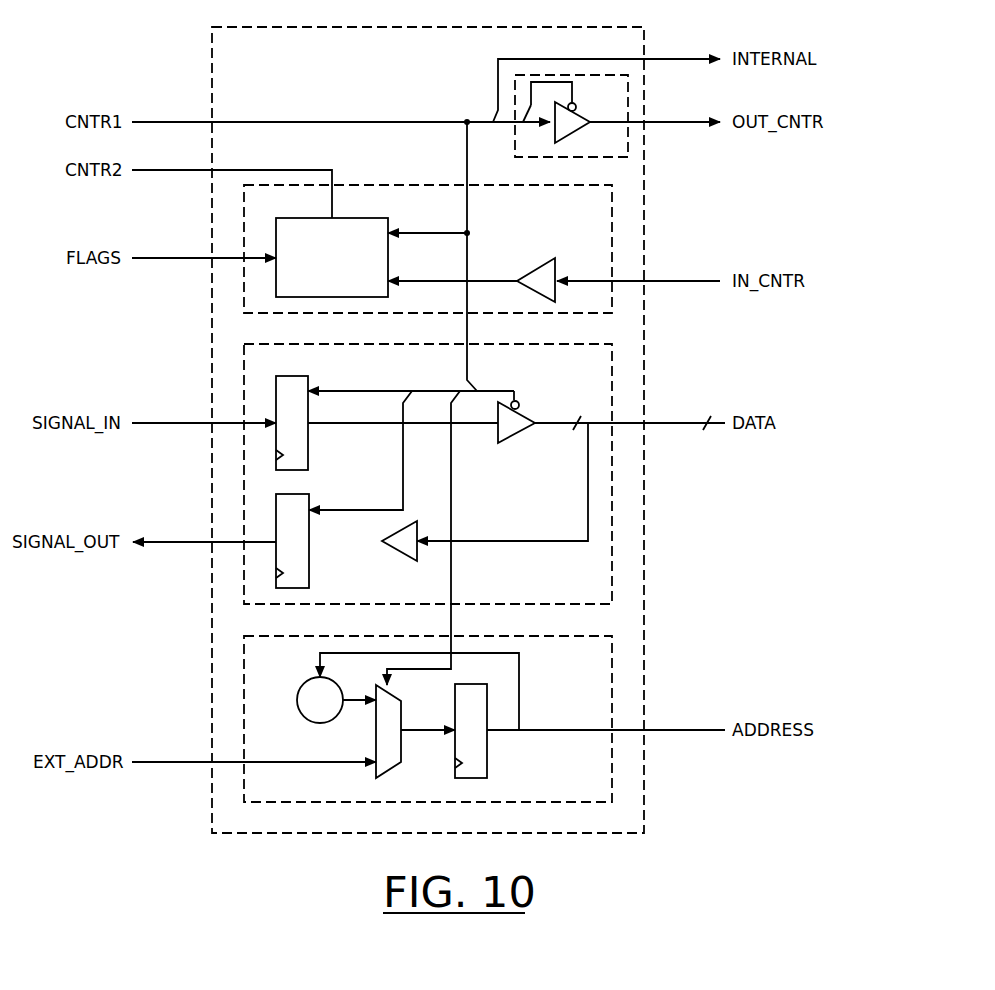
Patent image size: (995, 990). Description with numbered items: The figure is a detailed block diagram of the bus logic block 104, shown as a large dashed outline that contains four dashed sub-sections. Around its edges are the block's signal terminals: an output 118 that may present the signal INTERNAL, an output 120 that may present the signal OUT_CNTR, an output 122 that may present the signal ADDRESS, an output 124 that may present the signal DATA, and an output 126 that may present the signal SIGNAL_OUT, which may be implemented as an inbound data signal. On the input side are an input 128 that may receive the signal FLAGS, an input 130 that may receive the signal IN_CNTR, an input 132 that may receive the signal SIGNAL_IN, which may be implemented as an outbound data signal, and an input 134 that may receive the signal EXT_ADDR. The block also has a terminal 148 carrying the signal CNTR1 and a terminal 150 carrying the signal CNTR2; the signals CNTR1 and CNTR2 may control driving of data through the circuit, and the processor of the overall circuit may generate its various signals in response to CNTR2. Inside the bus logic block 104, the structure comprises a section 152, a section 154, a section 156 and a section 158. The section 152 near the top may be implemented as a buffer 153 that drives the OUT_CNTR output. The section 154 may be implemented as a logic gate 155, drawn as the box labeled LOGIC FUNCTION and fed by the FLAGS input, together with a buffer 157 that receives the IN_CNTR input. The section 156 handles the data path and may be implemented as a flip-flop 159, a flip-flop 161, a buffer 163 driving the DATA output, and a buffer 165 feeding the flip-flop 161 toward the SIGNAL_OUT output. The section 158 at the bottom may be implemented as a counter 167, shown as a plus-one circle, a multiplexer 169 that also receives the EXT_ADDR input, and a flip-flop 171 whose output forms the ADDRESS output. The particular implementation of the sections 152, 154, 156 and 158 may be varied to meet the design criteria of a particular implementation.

The bus logic block 104 is at (604, 24).
The output 118 is at (646, 62).
The output 120 is at (646, 125).
The output 122 is at (646, 733).
The output 124 is at (646, 426).
The output 126 is at (210, 544).
The input 128 is at (210, 260).
The input 130 is at (646, 284).
The input 132 is at (210, 425).
The input 134 is at (210, 764).
The CNTR1 signal line 148 is at (210, 124).
The CNTR2 signal line 150 is at (210, 172).
The section 152 is at (586, 160).
The buffer 153 is at (568, 133).
The section 154 is at (524, 185).
The logic gate 155 is at (362, 216).
The section 156 is at (548, 344).
The buffer 157 is at (542, 265).
The section 158 is at (512, 636).
The flip-flop 159 is at (300, 376).
The flip-flop 161 is at (300, 494).
The buffer 163 is at (520, 434).
The buffer 165 is at (402, 553).
The counter 167 is at (318, 723).
The multiplexer 169 is at (385, 770).
The flip-flop 171 is at (478, 778).